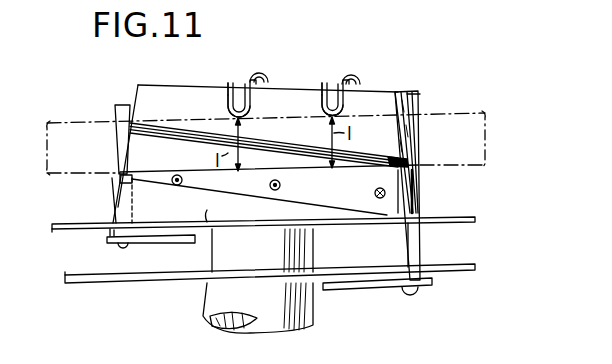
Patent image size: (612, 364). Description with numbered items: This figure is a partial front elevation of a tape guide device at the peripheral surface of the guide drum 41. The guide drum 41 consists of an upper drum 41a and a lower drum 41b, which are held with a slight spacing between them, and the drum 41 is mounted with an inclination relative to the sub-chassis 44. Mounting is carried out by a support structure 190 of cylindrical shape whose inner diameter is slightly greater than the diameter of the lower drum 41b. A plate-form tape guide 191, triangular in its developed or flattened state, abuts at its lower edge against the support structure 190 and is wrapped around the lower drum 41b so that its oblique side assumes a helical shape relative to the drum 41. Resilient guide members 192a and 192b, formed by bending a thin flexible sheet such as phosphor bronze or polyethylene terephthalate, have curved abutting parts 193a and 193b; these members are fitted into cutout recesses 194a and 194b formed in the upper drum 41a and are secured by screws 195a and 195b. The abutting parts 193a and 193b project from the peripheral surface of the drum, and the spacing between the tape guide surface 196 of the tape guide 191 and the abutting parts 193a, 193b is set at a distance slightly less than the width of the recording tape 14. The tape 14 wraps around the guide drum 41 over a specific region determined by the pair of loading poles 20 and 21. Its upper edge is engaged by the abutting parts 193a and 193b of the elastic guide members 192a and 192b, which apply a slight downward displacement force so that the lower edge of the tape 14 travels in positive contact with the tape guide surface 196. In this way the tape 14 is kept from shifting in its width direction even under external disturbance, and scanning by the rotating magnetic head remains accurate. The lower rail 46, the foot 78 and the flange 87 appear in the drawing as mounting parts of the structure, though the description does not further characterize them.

The recording tape 14 is at (468, 103).
The pole for loading 20 is at (418, 199).
The pole for loading 21 is at (113, 108).
The guide drum 41 is at (403, 89).
The upper drum 41a is at (152, 85).
The lower drum 41b is at (135, 158).
The sub-chassis 44 is at (464, 221).
The lower rail 46 is at (461, 272).
The mounting foot 78 is at (367, 290).
The mounting flange 87 is at (150, 245).
The support structure 190 is at (207, 213).
The tape guide 191 is at (351, 198).
The resilient guide member 192a is at (249, 97).
The resilient guide member 192b is at (343, 101).
The curved abutting part 193a is at (226, 110).
The curved abutting part 193b is at (321, 102).
The cutout recess 194a is at (234, 88).
The cutout recess 194b is at (331, 84).
The screw 195a is at (258, 72).
The screw 195b is at (357, 78).
The tape guide surface 196 is at (252, 175).